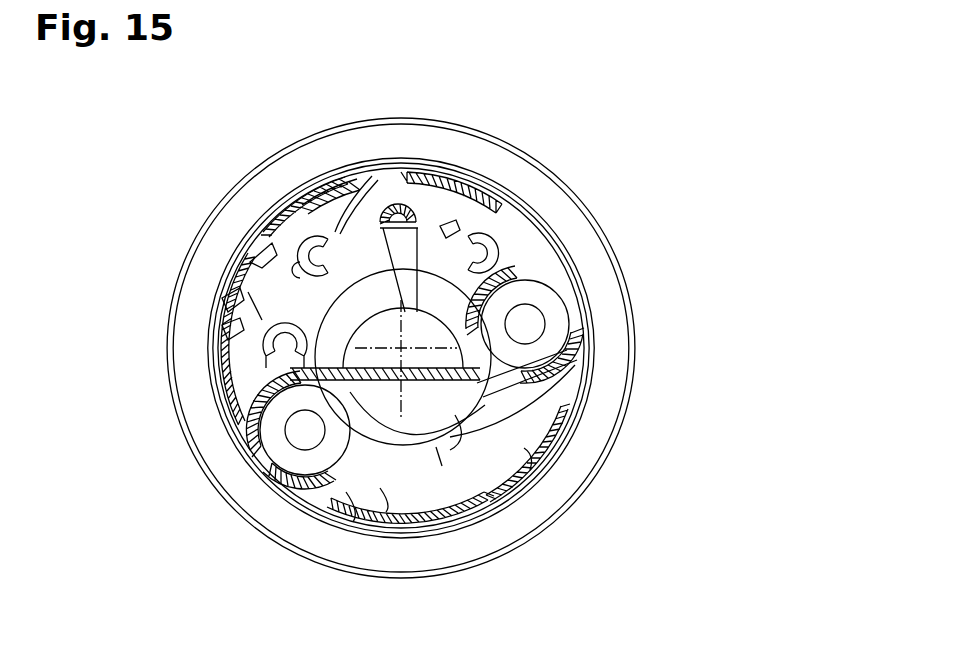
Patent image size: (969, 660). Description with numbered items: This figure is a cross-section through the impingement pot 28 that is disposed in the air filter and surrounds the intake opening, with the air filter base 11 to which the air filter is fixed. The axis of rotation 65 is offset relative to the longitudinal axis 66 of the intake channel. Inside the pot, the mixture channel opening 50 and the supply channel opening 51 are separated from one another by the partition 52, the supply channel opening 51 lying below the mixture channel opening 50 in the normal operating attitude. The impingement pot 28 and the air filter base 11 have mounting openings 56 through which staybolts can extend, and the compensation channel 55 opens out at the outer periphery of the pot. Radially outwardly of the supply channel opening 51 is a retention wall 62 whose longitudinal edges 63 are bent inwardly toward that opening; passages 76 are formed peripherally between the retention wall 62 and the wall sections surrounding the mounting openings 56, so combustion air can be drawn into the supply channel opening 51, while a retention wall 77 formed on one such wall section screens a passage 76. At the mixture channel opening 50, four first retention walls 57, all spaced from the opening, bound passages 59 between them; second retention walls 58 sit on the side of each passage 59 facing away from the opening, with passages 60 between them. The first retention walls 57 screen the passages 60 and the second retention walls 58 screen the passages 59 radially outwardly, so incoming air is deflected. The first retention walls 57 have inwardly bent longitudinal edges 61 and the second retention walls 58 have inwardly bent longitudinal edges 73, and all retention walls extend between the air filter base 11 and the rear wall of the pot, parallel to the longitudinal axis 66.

The air filter base 11 is at (578, 240).
The impingement pot 28 is at (488, 184).
The mixture channel opening 50 is at (573, 363).
The supply channel opening 51 is at (450, 430).
The partition 52 is at (427, 463).
The compensation channel 55 is at (305, 230).
The mounting openings 56 is at (557, 312).
The first retention walls 57 is at (395, 205).
The second retention walls 58 is at (455, 217).
The passages 59 is at (443, 233).
The passages 60 is at (415, 205).
The longitudinal edges 61 is at (403, 360).
The retention wall 62 is at (440, 455).
The longitudinal edges 63 is at (528, 455).
The axis of rotation 65 is at (400, 350).
The longitudinal axis 66 is at (385, 493).
The longitudinal edges 73 is at (448, 180).
The passages 76 is at (567, 407).
The retention wall 77 is at (490, 410).